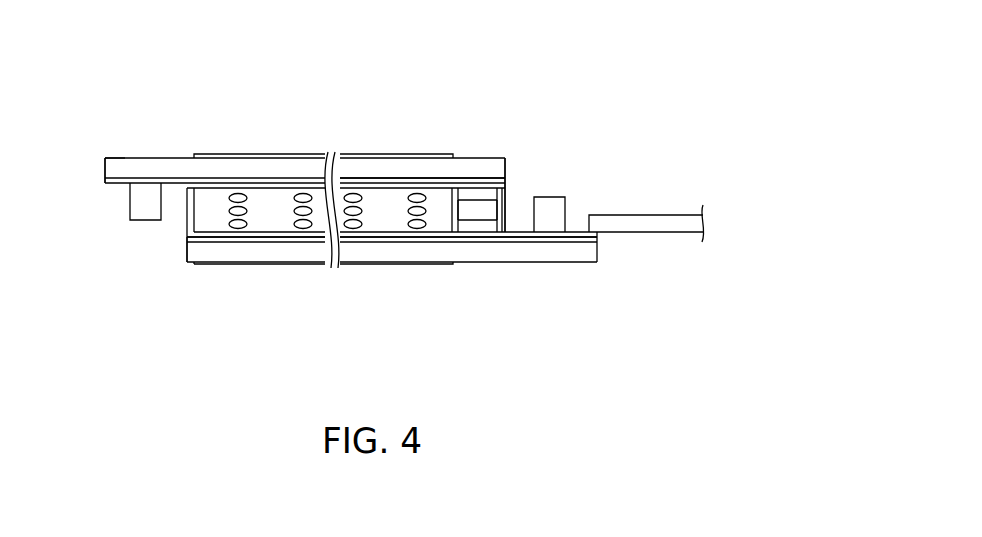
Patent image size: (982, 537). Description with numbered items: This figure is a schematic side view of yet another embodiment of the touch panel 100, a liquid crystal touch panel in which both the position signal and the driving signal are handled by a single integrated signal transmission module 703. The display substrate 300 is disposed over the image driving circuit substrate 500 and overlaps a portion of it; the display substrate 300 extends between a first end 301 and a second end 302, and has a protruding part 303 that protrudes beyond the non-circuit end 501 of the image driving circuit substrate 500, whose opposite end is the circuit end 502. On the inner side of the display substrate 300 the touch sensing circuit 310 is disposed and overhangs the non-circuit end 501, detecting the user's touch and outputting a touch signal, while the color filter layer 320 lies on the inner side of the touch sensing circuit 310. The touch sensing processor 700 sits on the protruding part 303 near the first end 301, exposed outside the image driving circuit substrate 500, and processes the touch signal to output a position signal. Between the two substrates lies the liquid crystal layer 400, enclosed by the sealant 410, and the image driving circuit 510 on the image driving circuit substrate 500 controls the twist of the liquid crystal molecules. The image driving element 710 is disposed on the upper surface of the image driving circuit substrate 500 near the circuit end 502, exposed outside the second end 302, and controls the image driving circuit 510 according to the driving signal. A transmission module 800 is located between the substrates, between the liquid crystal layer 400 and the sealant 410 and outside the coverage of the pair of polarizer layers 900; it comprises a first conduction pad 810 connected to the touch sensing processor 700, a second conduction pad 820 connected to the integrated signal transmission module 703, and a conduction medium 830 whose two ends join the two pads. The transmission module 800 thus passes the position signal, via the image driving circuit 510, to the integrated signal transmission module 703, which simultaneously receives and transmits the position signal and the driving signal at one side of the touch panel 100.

The touch panel 100 is at (93, 27).
The display substrate 300 is at (175, 165).
The first end 301 is at (92, 158).
The second end 302 is at (508, 158).
The protruding part 303 is at (120, 148).
The touch sensing circuit 310 is at (405, 180).
The color filter layer 320 is at (279, 188).
The liquid crystal layer 400 is at (220, 202).
The sealant 410 is at (188, 222).
The image driving circuit substrate 500 is at (225, 257).
The non-circuit end 501 is at (188, 253).
The circuit end 502 is at (597, 253).
The image driving circuit 510 is at (288, 237).
The touch sensing processor 700 is at (146, 212).
The integrated signal transmission module 703 is at (647, 222).
The image driving element 710 is at (546, 228).
The transmission module 800 is at (638, 85).
The first conduction pad 810 is at (480, 193).
The second conduction pad 820 is at (487, 227).
The conduction medium 830 is at (485, 210).
The polarizer layer 900 is at (305, 153).